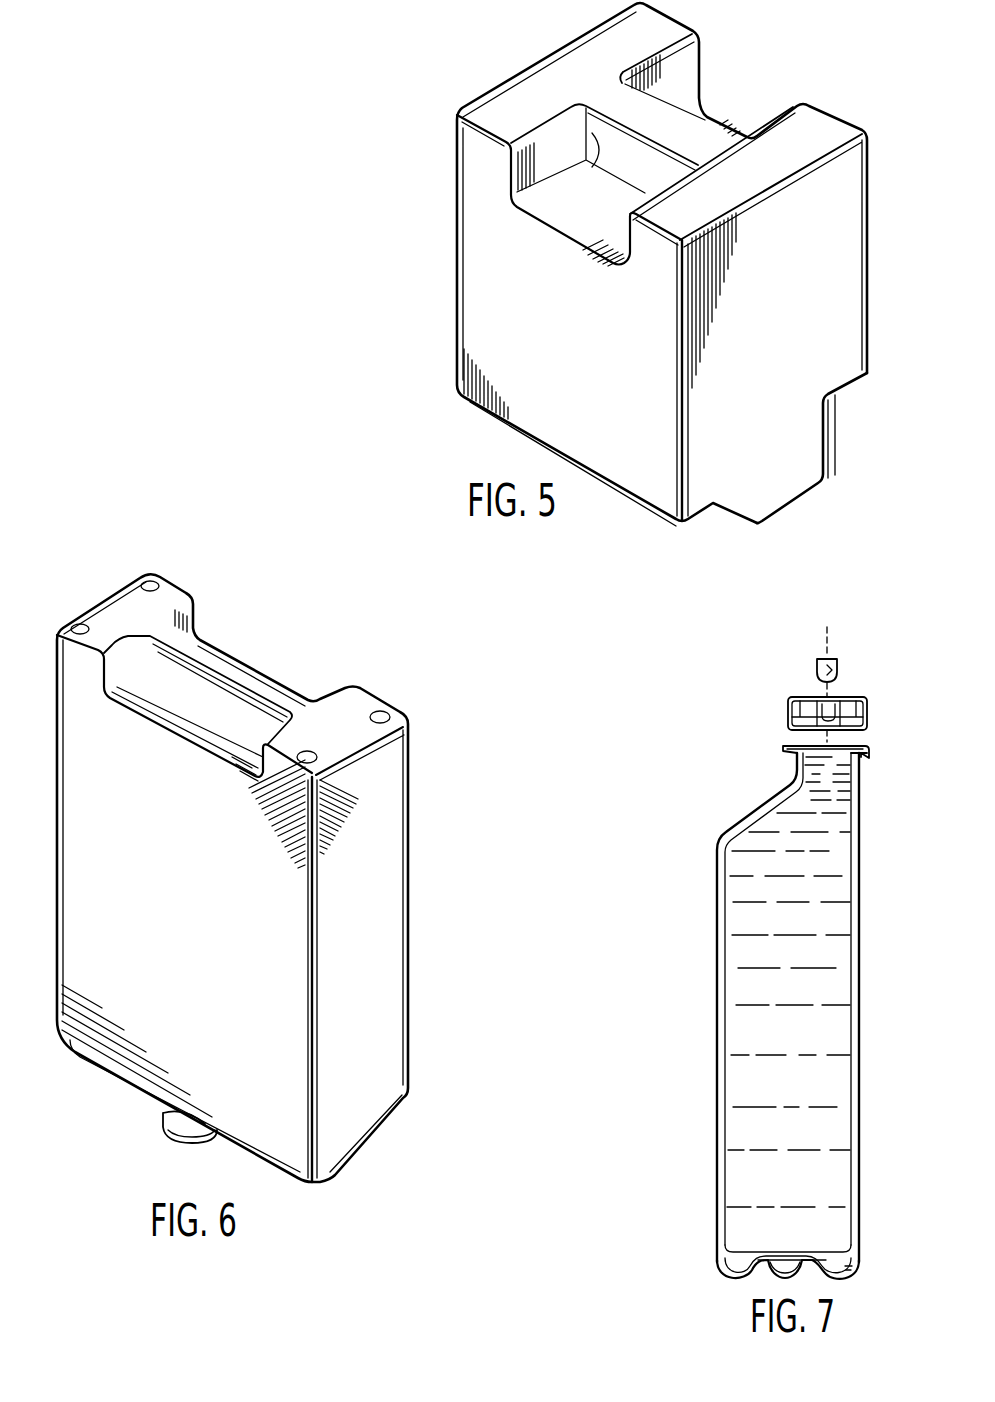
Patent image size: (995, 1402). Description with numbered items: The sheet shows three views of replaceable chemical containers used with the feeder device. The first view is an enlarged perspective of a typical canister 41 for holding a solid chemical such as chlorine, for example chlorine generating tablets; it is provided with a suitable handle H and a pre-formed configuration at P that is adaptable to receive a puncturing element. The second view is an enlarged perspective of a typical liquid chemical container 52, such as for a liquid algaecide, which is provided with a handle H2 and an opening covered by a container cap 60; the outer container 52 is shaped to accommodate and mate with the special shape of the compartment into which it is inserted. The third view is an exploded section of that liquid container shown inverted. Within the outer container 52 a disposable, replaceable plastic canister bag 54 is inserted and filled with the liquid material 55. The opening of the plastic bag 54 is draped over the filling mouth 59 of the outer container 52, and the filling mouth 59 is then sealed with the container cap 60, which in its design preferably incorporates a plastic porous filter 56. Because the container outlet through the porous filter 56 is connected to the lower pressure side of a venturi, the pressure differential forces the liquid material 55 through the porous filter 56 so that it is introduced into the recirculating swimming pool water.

In FIG. 5, the canister 41 is at (457, 303).
In FIG. 5, the handle H is at (683, 127).
In FIG. 5, the pre-formed configuration P is at (851, 388).
In FIG. 6, the container 52 is at (72, 1048).
In FIG. 6, the handle H2 is at (262, 675).
In FIG. 7, the handle H2 is at (800, 1270).
In FIG. 6, the container cap 60 is at (190, 1144).
In FIG. 7, the container cap 60 is at (796, 716).
In FIG. 7, the canister bag 54 is at (718, 945).
In FIG. 7, the liquid material 55 is at (755, 860).
In FIG. 7, the porous filter 56 is at (838, 668).
In FIG. 7, the filling mouth 59 is at (789, 748).